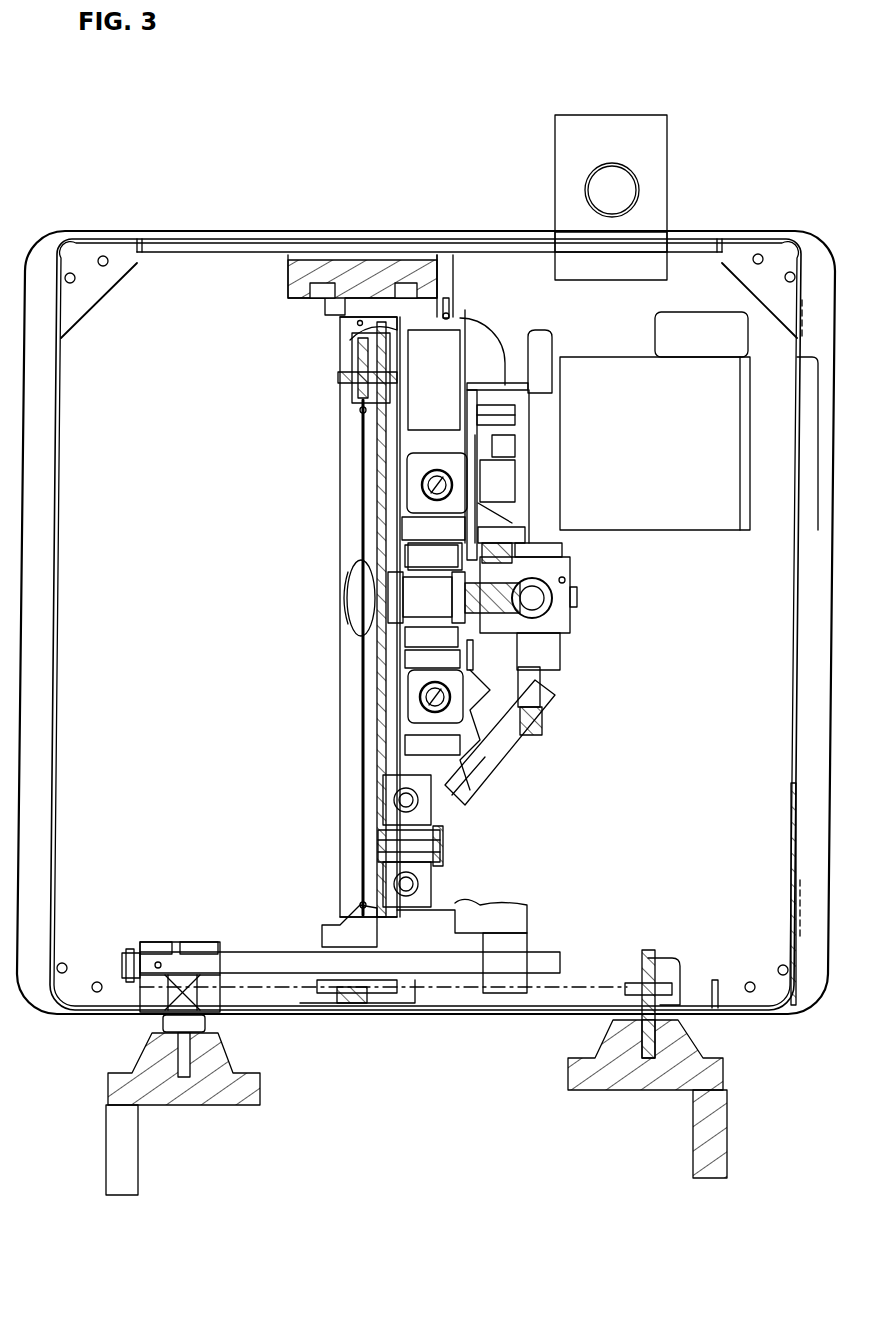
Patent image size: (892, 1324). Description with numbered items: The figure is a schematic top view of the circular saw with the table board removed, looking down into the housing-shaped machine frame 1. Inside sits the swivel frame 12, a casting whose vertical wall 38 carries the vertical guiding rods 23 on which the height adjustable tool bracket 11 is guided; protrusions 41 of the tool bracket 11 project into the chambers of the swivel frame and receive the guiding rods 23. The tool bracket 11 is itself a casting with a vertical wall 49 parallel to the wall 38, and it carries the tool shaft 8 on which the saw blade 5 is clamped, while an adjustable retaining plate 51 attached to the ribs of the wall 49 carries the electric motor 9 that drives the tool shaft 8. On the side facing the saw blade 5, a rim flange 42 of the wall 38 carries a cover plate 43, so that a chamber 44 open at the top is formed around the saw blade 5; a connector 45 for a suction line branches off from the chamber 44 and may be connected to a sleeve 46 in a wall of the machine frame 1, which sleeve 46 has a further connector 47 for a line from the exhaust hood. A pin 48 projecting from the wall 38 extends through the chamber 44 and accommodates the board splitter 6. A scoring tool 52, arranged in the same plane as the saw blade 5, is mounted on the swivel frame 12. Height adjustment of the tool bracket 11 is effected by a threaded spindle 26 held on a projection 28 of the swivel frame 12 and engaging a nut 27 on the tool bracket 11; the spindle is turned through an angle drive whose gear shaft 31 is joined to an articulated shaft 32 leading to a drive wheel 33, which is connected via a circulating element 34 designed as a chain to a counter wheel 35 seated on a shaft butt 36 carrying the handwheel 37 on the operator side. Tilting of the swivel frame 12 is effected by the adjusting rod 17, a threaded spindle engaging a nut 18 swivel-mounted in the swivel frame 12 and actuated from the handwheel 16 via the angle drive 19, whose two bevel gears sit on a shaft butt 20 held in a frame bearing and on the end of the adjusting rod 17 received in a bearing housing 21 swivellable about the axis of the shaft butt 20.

The machine frame 1 is at (215, 222).
The saw blade 5 is at (348, 440).
The board splitter 6 is at (350, 347).
The tool shaft 8 is at (350, 598).
The electric motor 9 is at (700, 390).
The tool bracket 11 is at (515, 400).
The swivel frame 12 is at (455, 296).
The handwheel 16 is at (130, 1102).
The adjusting rod 17 is at (295, 975).
The nut 18 is at (520, 978).
The angle drive 19 is at (172, 925).
The shaft butt 20 is at (140, 1010).
The bearing housing 21 is at (190, 945).
The guiding rods 23 is at (425, 690).
The threaded spindle 26 is at (575, 590).
The nut 27 is at (552, 640).
The projection 28 is at (567, 605).
The gear shaft 31 is at (545, 690).
The articulated shaft 32 is at (480, 770).
The drive wheel 33 is at (375, 1000).
The circulating element 34 is at (458, 985).
The counter wheel 35 is at (630, 990).
The shaft butt 36 is at (648, 950).
The handwheel 37 is at (700, 1072).
The vertical wall 38 is at (402, 362).
The protrusions 41 is at (470, 712).
The rim flange 42 is at (338, 320).
The cover plate 43 is at (340, 490).
The chamber 44 is at (345, 537).
The connector 45 is at (487, 340).
The sleeve 46 is at (667, 133).
The further connector 47 is at (632, 188).
The pin 48 is at (345, 383).
The vertical wall 49 is at (548, 730).
The retaining plate 51 is at (560, 330).
The scoring tool 52 is at (370, 838).